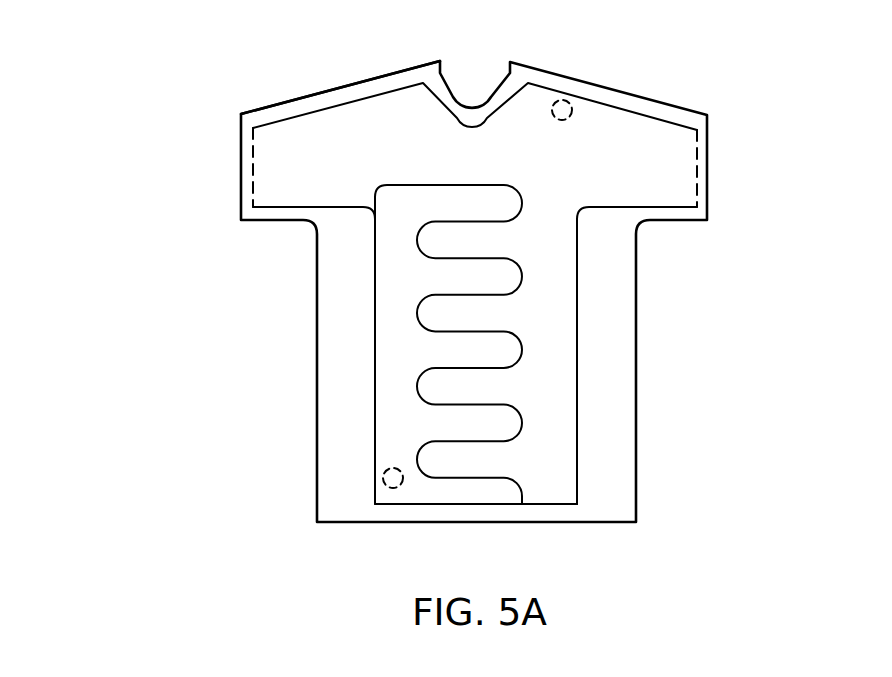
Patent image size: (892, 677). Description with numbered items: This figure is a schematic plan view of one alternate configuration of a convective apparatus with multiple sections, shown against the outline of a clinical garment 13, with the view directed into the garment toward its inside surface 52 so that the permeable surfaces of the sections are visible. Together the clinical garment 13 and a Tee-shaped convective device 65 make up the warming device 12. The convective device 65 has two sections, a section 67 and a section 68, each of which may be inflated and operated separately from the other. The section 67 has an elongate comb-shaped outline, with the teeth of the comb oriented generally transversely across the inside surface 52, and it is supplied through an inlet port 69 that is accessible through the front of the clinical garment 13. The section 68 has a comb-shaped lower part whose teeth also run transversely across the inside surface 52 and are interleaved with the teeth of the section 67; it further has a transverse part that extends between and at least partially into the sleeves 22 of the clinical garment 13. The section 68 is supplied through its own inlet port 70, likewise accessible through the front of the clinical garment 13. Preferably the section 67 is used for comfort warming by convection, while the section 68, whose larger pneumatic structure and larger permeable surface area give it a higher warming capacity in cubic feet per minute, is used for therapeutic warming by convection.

The warming device 12 is at (223, 69).
The clinical garment 13 is at (397, 48).
The sleeves 22 is at (298, 97).
The inlet port 70 is at (563, 99).
The inside surface 52 is at (337, 432).
The section 67 is at (393, 328).
The section 68 is at (560, 352).
The inlet port 69 is at (395, 490).
The convective device 65 is at (607, 526).